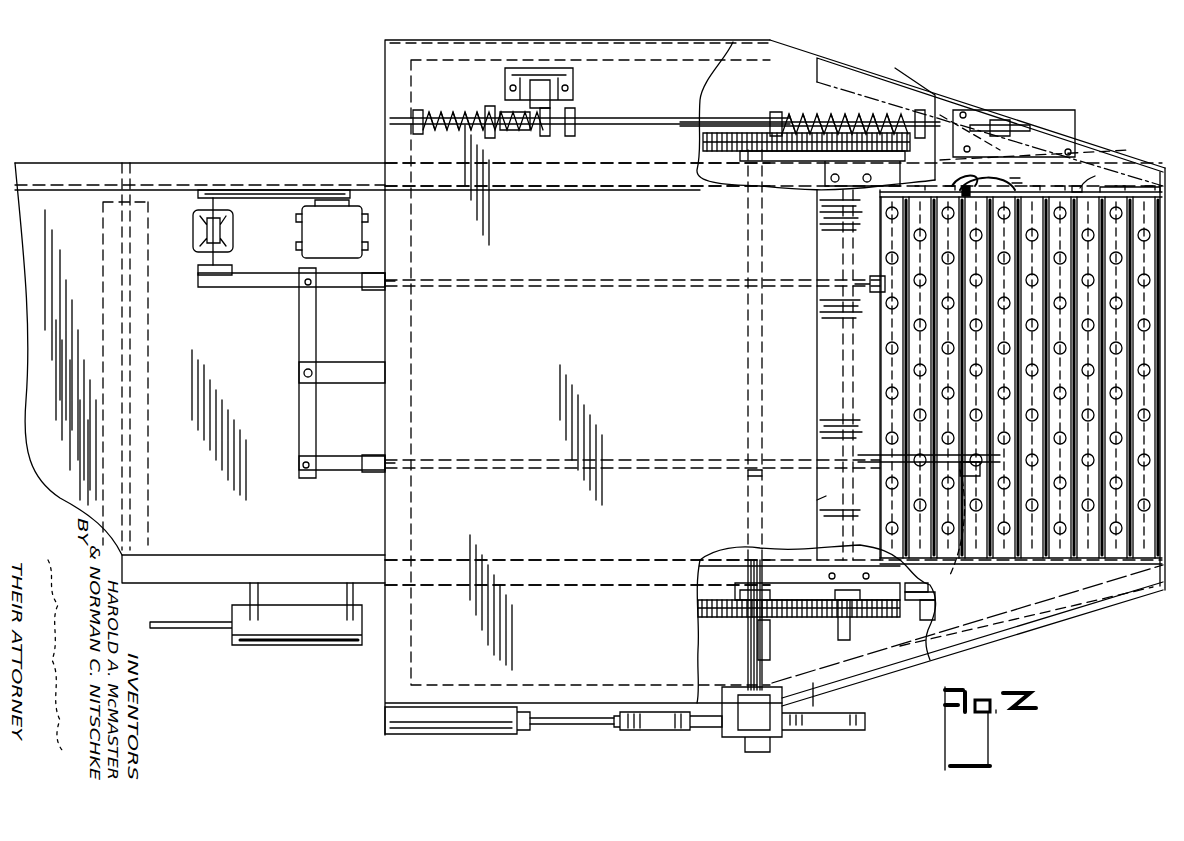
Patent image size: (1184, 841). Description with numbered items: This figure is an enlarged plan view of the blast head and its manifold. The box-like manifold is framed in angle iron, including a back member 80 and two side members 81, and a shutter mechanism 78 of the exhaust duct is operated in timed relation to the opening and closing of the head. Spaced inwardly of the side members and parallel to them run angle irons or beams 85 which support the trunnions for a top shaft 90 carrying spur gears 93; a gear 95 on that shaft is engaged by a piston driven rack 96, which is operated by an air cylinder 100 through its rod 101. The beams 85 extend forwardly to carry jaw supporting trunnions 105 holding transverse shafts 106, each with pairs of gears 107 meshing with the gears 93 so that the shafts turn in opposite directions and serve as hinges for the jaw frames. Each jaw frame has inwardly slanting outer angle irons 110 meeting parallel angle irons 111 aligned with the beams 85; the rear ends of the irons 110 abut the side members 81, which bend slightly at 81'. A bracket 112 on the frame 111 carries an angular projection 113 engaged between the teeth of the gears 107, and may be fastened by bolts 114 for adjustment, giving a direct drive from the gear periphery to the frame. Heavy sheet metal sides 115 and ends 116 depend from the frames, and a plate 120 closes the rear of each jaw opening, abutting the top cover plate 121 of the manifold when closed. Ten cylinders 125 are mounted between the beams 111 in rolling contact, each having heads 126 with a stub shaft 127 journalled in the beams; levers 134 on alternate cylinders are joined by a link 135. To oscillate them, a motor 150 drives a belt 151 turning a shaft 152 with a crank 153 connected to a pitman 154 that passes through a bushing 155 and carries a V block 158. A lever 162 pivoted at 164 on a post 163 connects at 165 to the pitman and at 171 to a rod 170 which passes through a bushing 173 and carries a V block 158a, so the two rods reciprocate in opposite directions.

The shutter mechanism 78 is at (145, 450).
The back member 80 is at (405, 408).
The side members 81 is at (733, 349).
The bend of side members 81' is at (967, 340).
The angle irons or beams 85 is at (592, 175).
The top shaft 90 is at (760, 487).
The top spur gears 93 is at (728, 142).
The gear 95 is at (800, 733).
The piston driven rack 96 is at (672, 730).
The air cylinder 100 is at (488, 735).
The rod 101 is at (595, 726).
The jaw supporting trunnions 105 is at (830, 172).
The shafts 106 is at (825, 500).
The gears 107 is at (822, 118).
The outer angle irons 110 is at (955, 100).
The parallel angle irons 111 is at (1082, 145).
The bracket 112 is at (928, 588).
The angular projection 113 is at (912, 600).
The bolts 114 is at (935, 612).
The sheet metal sides 115 is at (1010, 115).
The end walls 116 is at (1160, 600).
The plate 120 is at (820, 240).
The top cover plate 121 is at (640, 390).
The cylinders 125 is at (1028, 562).
The heads 126 is at (1138, 190).
The stub shaft 127 is at (994, 178).
The levers 134 is at (950, 180).
The link 135 is at (1094, 180).
The motor 150 is at (326, 218).
The belt 151 is at (275, 200).
The shaft 152 is at (222, 211).
The crank 153 is at (196, 270).
The pitman 154 is at (230, 290).
The bushing 155 is at (370, 292).
The V block 158 is at (872, 296).
The V block 158a is at (968, 578).
The lever 162 is at (299, 332).
The post 163 is at (340, 362).
The pivot 164 is at (300, 378).
The connection 165 is at (306, 287).
The rod 170 is at (336, 456).
The pivotal connection 171 is at (306, 470).
The bushing 173 is at (370, 474).